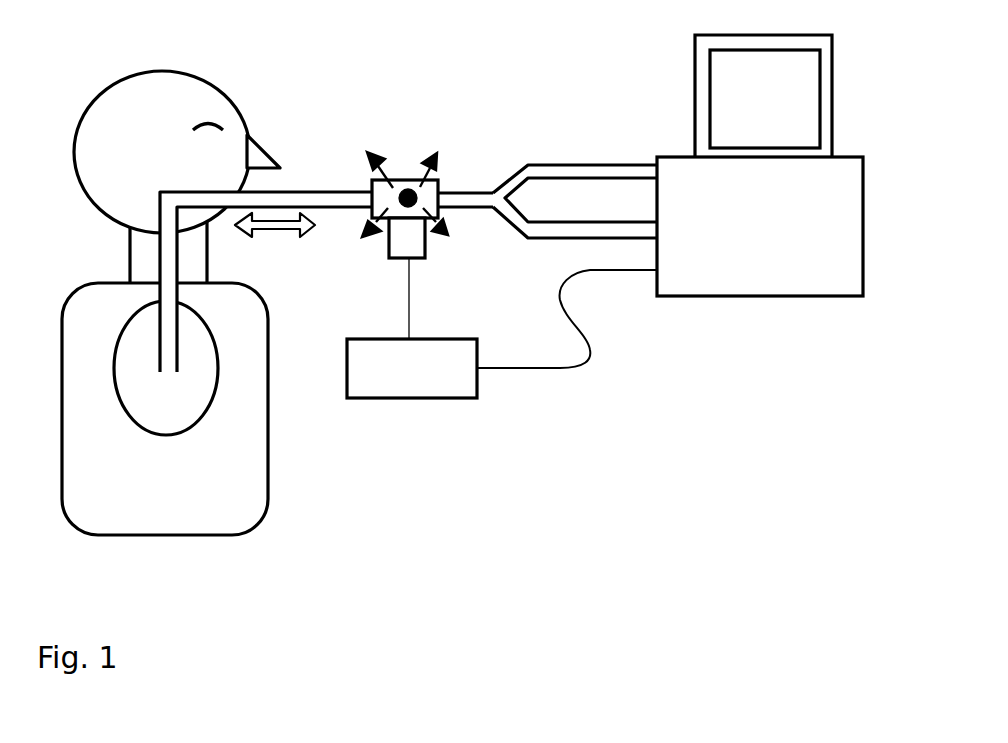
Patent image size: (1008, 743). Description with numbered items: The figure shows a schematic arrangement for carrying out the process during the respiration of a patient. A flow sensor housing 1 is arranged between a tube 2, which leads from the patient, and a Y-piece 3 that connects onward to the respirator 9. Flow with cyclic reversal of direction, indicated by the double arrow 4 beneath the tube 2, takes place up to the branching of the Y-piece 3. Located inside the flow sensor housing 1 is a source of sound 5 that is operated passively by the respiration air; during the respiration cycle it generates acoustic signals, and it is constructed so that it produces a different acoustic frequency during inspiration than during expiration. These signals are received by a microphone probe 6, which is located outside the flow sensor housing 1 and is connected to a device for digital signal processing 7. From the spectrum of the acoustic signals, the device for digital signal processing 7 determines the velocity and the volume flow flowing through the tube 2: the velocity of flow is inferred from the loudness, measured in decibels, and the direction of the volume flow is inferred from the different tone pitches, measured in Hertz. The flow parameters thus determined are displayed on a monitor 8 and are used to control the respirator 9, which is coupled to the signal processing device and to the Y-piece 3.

The flow sensor housing 1 is at (440, 186).
The tube 2 is at (310, 197).
The Y-piece 3 is at (503, 196).
The gas flow direction 4 is at (272, 232).
The source of sound 5 is at (410, 180).
The microphone probe 6 is at (403, 237).
The device for digital signal processing 7 is at (412, 377).
The monitor 8 is at (765, 103).
The respirator 9 is at (775, 248).